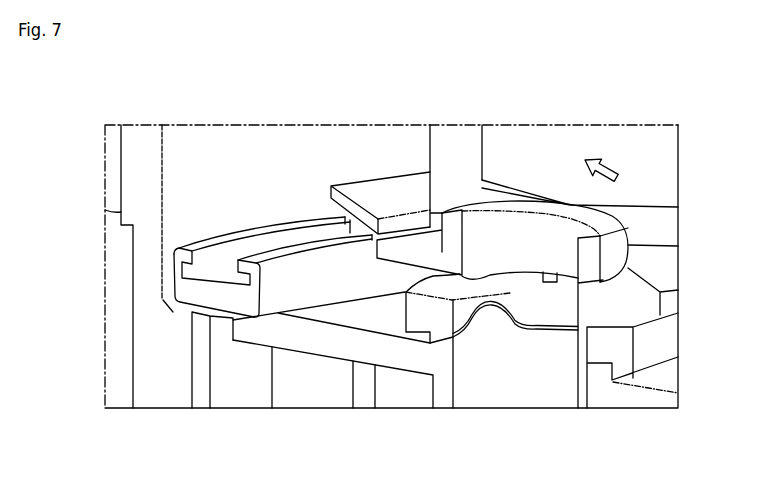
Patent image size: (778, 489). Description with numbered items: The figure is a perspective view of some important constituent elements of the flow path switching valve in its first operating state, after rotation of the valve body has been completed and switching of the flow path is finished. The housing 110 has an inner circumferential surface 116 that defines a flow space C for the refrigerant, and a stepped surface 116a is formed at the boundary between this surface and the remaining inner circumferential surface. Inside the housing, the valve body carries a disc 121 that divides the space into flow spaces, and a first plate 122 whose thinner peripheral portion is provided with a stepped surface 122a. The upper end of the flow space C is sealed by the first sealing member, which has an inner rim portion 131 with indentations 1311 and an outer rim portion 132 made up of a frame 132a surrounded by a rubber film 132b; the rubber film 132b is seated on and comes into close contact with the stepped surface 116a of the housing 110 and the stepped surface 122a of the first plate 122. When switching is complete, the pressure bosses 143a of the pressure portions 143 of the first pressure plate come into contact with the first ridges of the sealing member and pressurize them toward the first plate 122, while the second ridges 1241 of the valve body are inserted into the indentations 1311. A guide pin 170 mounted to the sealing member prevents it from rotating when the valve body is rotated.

The housing 110 is at (140, 140).
The inner circumferential surface 116 is at (222, 373).
The stepped surface 116a is at (170, 305).
The disc 121 is at (342, 395).
The first plate 122 is at (313, 337).
The stepped surface 122a is at (268, 345).
The inner rim portion 131 is at (620, 352).
The indentations 1311 is at (527, 275).
The second ridges 1241 is at (478, 312).
The outer rim portion 132 is at (211, 215).
The frame 132a is at (215, 255).
The rubber film 132b is at (187, 297).
The pressure portions 143 is at (390, 192).
The pressure bosses 143a is at (340, 225).
The guide pins 170 is at (463, 152).
The flow space C is at (240, 360).